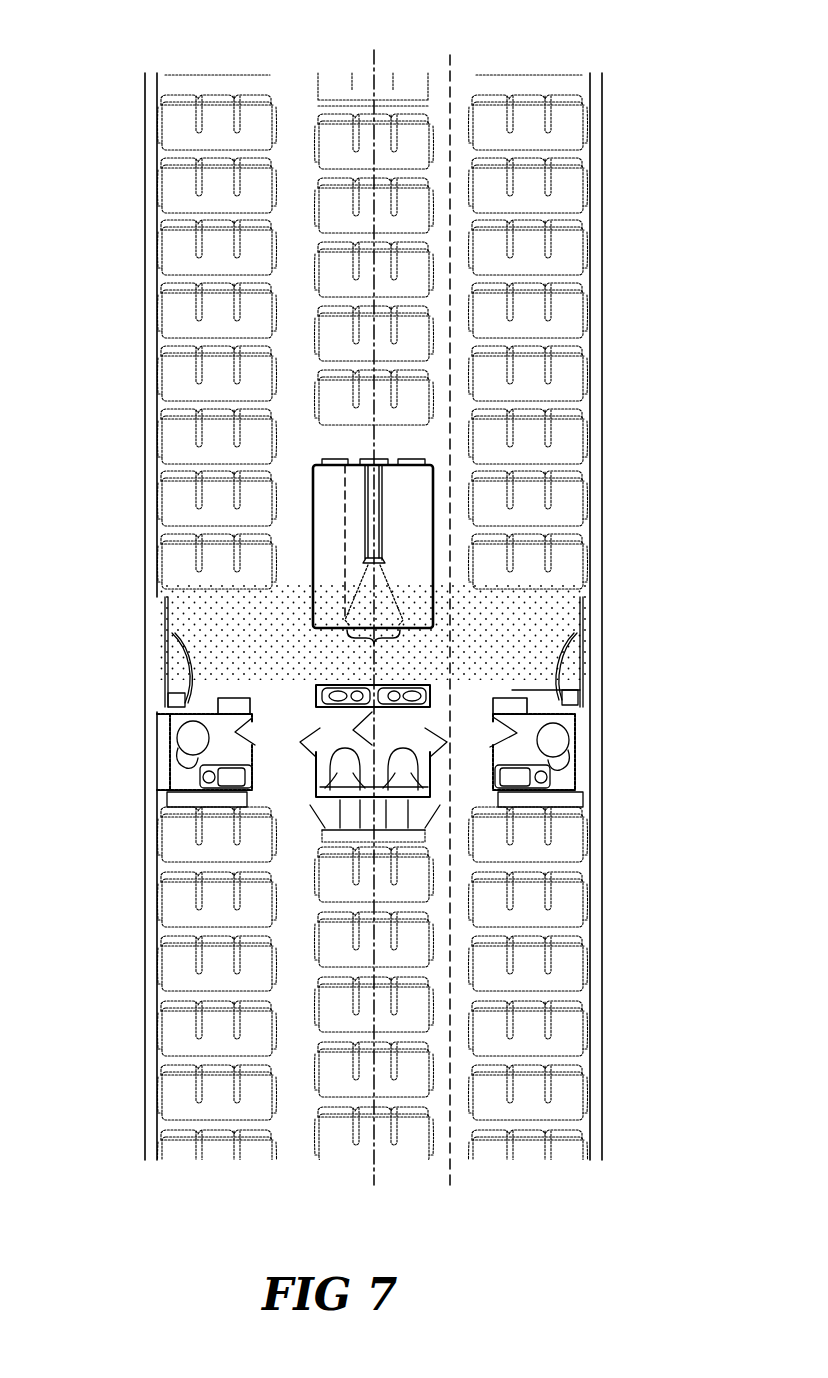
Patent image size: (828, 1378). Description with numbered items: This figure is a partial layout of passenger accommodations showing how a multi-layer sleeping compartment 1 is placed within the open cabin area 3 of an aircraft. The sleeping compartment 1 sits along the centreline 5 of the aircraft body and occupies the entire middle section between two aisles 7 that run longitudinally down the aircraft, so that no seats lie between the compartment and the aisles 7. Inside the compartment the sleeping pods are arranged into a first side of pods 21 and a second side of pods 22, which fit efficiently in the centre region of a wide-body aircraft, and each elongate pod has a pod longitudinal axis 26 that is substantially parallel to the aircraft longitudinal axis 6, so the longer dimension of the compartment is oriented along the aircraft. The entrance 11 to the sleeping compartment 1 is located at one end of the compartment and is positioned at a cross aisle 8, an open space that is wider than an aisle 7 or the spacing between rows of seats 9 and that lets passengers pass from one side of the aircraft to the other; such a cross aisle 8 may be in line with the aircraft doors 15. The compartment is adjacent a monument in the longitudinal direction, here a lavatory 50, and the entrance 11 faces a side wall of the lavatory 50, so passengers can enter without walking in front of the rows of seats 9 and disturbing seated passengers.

The multi-layer sleeping compartment 1 is at (158, 584).
The open cabin area 3 is at (356, 511).
The centreline 5 is at (374, 52).
The aircraft longitudinal axis 6 is at (452, 56).
The aisle 7 is at (296, 243).
The cross aisle 8 is at (520, 622).
The seats 9 is at (367, 877).
The entrance 11 is at (374, 642).
The aircraft doors 15 is at (580, 661).
The first side of pods 21 is at (352, 545).
The second side of pods 22 is at (404, 545).
The pod longitudinal axis 26 is at (346, 458).
The lavatory 50 is at (318, 691).